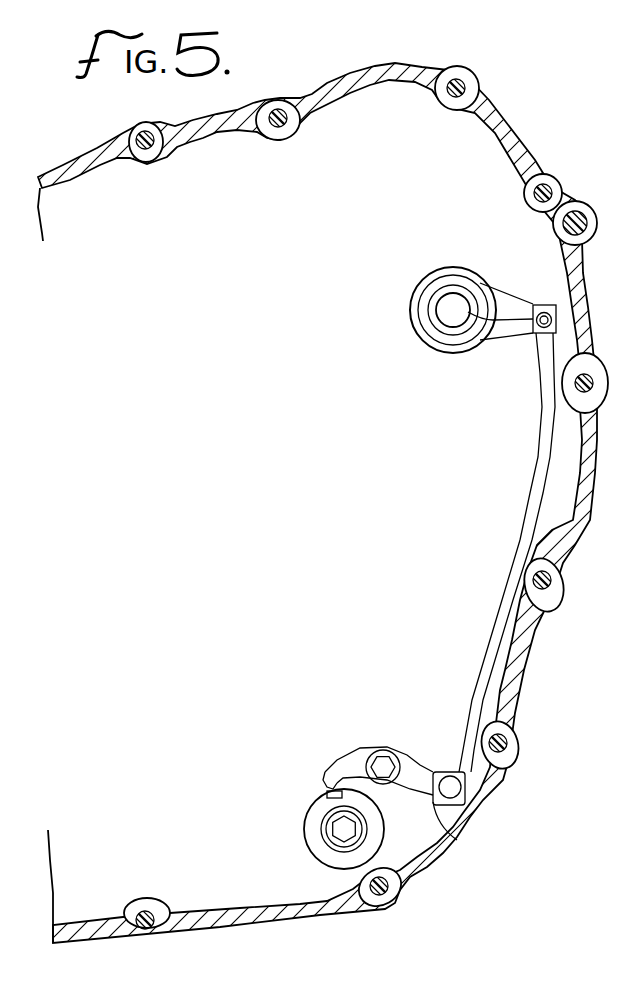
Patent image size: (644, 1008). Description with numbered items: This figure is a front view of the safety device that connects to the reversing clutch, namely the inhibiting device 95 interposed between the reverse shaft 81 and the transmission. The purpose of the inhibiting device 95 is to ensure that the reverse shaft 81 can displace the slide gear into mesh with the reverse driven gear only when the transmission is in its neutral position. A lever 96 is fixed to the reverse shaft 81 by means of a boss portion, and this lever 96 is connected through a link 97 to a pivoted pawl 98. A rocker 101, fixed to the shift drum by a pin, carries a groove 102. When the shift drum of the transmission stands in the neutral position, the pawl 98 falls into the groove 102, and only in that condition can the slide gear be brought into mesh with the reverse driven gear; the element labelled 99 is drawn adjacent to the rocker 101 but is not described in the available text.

The reverse shaft 81 is at (556, 320).
The inhibiting device 95 is at (503, 635).
The lever 96 is at (524, 303).
The link 97 is at (548, 447).
The pawl 98 is at (423, 787).
The adjusting bolt 99 is at (330, 832).
The rocker 101 is at (306, 822).
The groove 102 is at (335, 775).